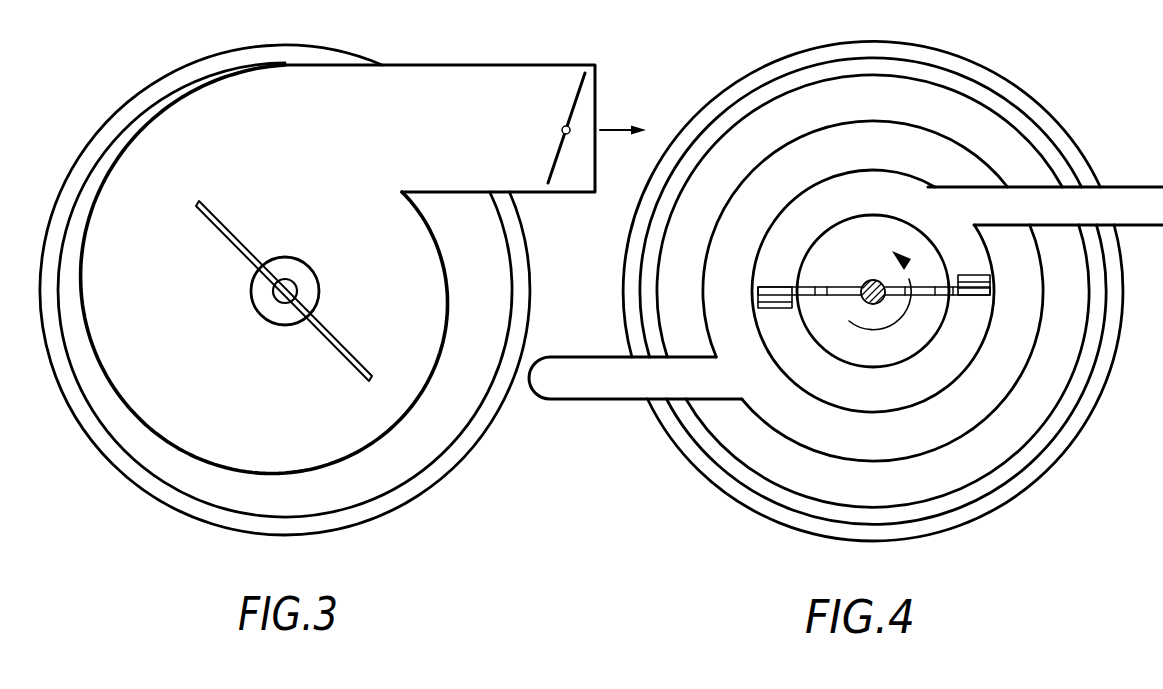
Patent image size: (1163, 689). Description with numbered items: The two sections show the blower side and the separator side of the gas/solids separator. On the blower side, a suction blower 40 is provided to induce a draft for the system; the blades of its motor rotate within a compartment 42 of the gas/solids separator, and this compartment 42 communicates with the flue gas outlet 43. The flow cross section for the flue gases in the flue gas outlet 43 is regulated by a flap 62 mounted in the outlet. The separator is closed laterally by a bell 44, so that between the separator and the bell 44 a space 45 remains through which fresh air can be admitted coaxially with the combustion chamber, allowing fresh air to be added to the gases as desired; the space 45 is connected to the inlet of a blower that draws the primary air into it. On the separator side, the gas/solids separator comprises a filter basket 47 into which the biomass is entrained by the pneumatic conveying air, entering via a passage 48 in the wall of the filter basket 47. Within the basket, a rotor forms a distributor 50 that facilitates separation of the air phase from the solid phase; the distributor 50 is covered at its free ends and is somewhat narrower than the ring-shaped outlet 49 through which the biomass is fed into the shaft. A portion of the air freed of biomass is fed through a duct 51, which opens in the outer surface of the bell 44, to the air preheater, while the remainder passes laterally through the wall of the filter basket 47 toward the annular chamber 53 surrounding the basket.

In FIG. 3, the suction blower 40 is at (333, 329).
In FIG. 3, the compartment 42 is at (366, 432).
In FIG. 3, the flue gas outlet 43 is at (529, 87).
In FIG. 3, the bell 44 is at (414, 498).
In FIG. 3, the space 45 is at (96, 442).
In FIG. 3, the flap 62 is at (558, 147).
In FIG. 4, the filter basket 47 is at (832, 176).
In FIG. 4, the passage 48 is at (963, 193).
In FIG. 4, the outlet 49 is at (928, 378).
In FIG. 4, the distributor 50 is at (822, 287).
In FIG. 4, the duct 51 is at (592, 389).
In FIG. 4, the annular chamber 53 is at (797, 424).